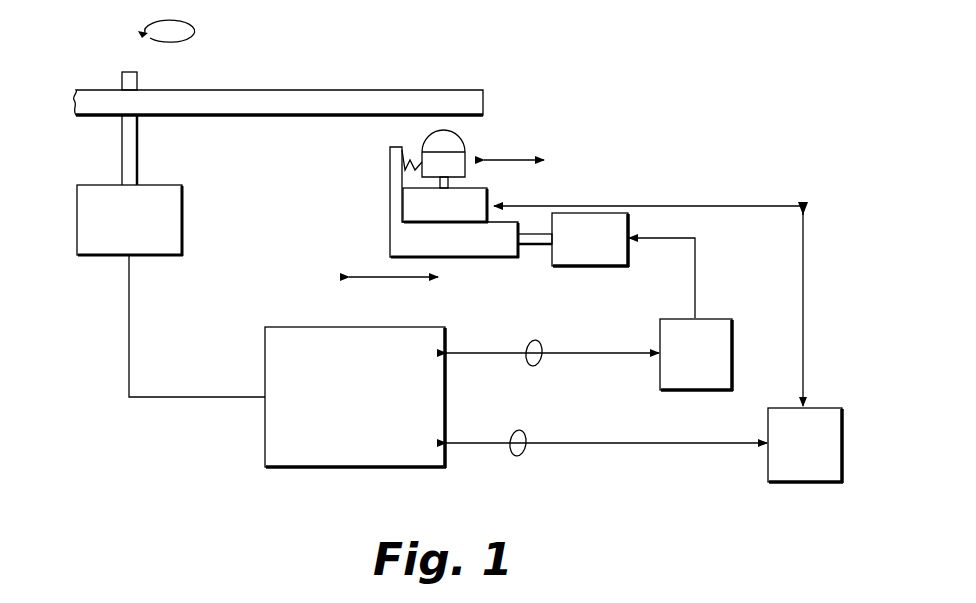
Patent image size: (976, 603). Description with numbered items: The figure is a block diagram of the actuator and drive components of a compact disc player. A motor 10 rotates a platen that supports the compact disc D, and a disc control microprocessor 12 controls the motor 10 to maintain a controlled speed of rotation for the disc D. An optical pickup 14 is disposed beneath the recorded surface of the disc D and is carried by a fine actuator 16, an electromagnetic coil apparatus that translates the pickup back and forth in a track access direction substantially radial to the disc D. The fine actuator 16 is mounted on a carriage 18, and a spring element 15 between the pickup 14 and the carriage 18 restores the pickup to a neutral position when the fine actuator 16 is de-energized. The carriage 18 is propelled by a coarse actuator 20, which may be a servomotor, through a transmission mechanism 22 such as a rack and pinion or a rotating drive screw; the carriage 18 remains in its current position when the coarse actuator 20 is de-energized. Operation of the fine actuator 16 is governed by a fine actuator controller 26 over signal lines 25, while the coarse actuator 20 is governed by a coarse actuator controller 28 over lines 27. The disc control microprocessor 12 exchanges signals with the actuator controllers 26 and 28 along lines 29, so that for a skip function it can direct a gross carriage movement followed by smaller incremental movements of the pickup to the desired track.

The compact disc D is at (273, 90).
The motor 10 is at (88, 176).
The disc control microprocessor 12 is at (265, 433).
The optical pickup 14 is at (457, 142).
The spring element 15 is at (404, 147).
The fine actuator 16 is at (467, 202).
The carriage 18 is at (397, 200).
The coarse actuator 20 is at (607, 232).
The transmission mechanism 22 is at (535, 245).
The signal lines 25 is at (803, 253).
The fine actuator controller 26 is at (820, 428).
The lines 27 is at (696, 277).
The coarse actuator controller 28 is at (722, 332).
The lines 29 is at (532, 366).